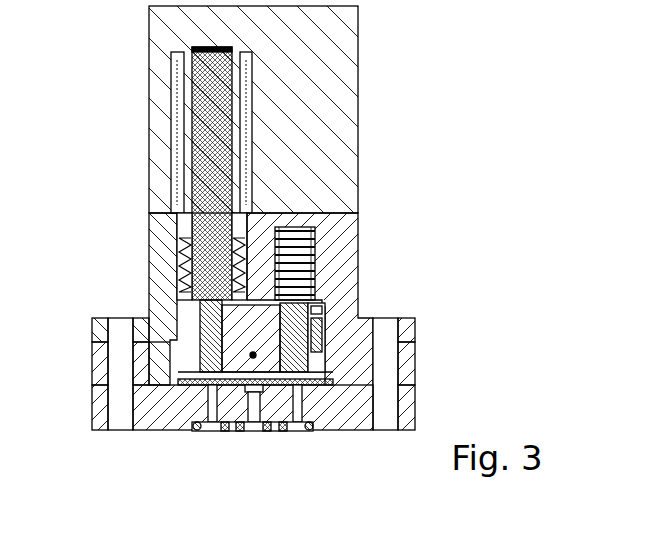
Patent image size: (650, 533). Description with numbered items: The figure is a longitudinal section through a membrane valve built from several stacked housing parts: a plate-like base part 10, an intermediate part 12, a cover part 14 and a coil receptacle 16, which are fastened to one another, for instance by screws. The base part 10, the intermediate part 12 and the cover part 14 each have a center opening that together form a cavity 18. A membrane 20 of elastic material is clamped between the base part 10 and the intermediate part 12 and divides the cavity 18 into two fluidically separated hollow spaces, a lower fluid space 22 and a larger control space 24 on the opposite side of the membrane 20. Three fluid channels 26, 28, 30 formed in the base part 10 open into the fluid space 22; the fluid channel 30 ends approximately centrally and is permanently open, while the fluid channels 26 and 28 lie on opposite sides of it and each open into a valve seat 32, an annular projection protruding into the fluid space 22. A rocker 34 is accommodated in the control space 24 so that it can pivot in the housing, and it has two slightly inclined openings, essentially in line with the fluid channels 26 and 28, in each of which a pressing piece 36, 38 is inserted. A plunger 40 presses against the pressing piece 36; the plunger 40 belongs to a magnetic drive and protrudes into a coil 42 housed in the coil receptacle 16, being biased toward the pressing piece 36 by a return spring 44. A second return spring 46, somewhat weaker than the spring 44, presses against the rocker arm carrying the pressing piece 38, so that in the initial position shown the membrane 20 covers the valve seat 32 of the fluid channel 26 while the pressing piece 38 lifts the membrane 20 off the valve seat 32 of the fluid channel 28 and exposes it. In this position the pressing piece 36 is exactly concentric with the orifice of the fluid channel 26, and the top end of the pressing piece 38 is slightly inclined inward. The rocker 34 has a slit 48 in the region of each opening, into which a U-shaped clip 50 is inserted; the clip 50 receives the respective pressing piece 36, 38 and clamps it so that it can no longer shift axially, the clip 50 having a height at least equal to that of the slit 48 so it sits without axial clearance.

The base part 10 is at (98, 420).
The intermediate part 12 is at (98, 367).
The cover part 14 is at (92, 332).
The coil receptacle 16 is at (155, 145).
The cavity 18 is at (330, 300).
The membrane 20 is at (320, 376).
The fluid space 22 is at (246, 431).
The control space 24 is at (177, 308).
The fluid channel 26 is at (212, 430).
The fluid channel 28 is at (293, 430).
The fluid channel 30 is at (254, 431).
The valve seat 32 is at (165, 428).
The rocker 34 is at (310, 344).
The pressing piece 36 is at (177, 345).
The pressing piece 38 is at (340, 272).
The plunger 40 is at (205, 92).
The coil 42 is at (175, 58).
The return spring 44 is at (180, 242).
The return spring 46 is at (315, 240).
The slit 48 is at (325, 325).
The clip 50 is at (388, 307).